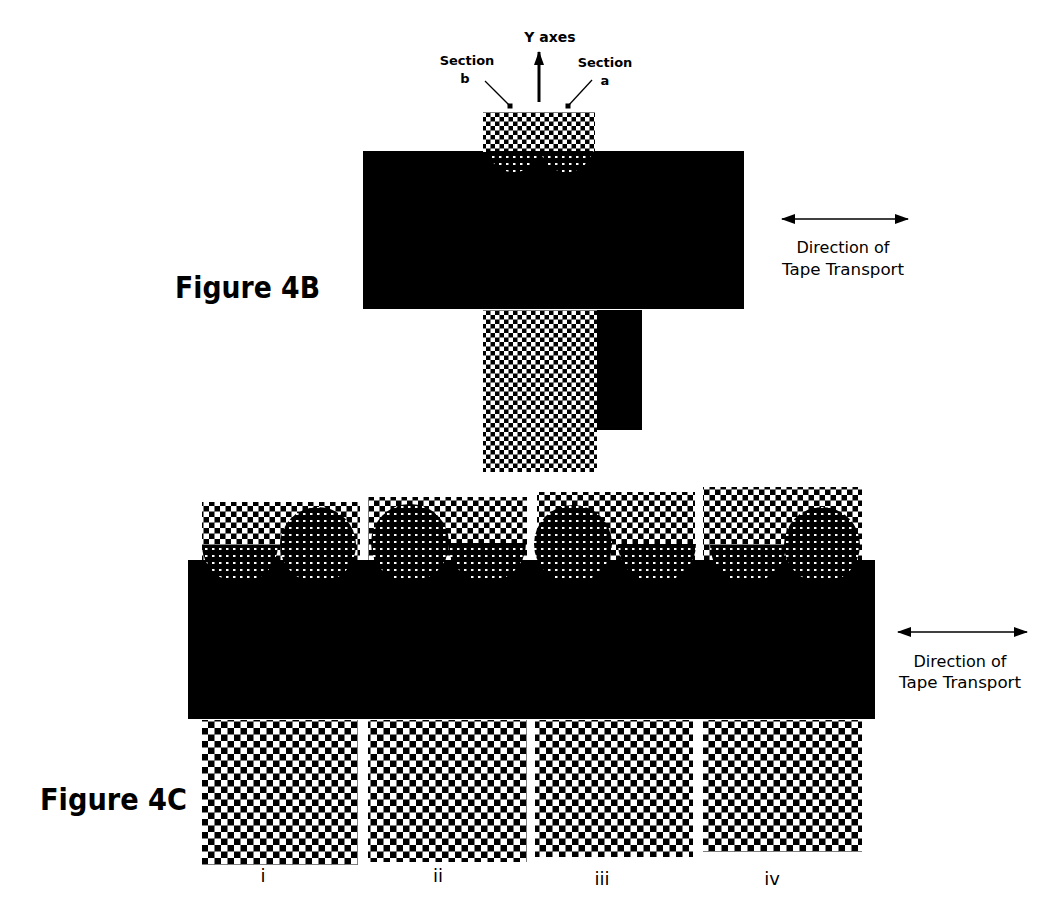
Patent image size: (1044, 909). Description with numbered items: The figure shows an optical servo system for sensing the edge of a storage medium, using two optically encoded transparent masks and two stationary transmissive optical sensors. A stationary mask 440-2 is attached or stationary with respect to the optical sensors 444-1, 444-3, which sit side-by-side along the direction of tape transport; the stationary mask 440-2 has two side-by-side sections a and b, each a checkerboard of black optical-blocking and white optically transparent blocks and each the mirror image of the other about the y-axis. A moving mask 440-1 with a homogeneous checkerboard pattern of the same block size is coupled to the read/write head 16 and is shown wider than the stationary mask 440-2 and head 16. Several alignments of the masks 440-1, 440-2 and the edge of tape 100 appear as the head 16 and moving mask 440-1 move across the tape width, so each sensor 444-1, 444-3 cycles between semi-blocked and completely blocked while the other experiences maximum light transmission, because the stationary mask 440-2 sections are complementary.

In FIG. 4B, the tape 100 is at (713, 152).
In FIG. 4C, the tape 100 is at (875, 592).
In FIG. 4B, the moving mask 440-1 is at (483, 420).
In FIG. 4C, the moving mask 440-1 is at (862, 768).
In FIG. 4B, the stationary mask 440-2 is at (597, 127).
In FIG. 4C, the stationary mask 440-2 is at (862, 492).
In FIG. 4B, the optical sensor 444-1 is at (603, 132).
In FIG. 4C, the optical sensor 444-1 is at (873, 532).
In FIG. 4B, the optical sensor 444-3 is at (460, 133).
In FIG. 4C, the optical sensor 444-3 is at (760, 480).
In FIG. 4B, the head 16 is at (642, 398).